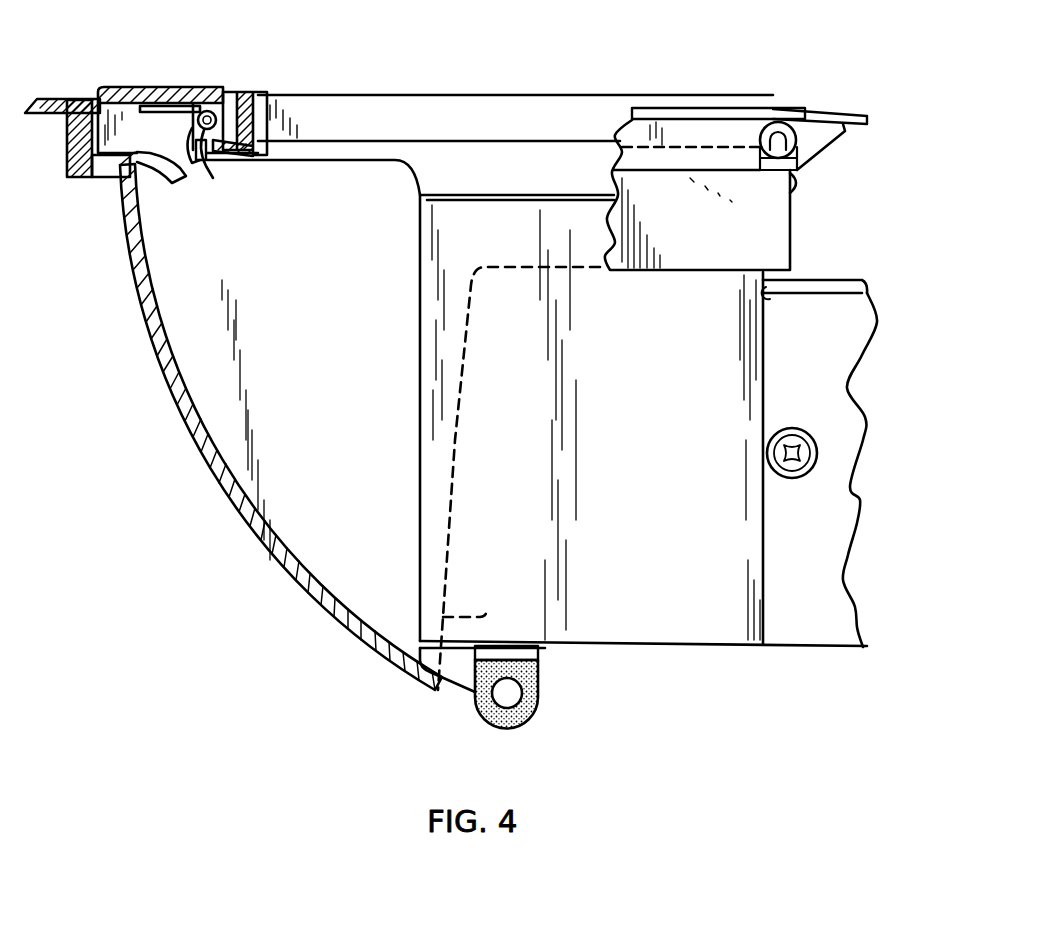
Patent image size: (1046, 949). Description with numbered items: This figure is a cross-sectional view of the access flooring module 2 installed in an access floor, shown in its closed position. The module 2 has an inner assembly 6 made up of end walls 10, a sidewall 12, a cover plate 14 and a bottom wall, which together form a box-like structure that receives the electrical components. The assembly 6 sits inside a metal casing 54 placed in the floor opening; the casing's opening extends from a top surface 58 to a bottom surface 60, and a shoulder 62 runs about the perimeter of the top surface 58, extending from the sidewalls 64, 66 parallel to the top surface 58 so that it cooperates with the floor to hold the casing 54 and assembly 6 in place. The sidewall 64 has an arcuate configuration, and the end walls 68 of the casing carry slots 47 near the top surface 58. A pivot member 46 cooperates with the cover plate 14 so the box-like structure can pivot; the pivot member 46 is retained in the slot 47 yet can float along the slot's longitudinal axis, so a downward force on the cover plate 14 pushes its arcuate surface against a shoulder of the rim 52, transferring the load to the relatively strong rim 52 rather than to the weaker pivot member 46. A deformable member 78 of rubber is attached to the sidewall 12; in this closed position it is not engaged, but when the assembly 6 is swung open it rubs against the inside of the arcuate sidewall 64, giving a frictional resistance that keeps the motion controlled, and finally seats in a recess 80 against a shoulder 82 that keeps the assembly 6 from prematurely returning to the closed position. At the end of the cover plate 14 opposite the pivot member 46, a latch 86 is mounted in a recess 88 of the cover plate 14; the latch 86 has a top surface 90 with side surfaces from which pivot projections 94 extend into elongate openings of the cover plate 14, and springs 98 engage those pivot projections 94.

The access flooring module 2 is at (326, 700).
The inner assembly 6 is at (815, 260).
The end walls 10 is at (607, 572).
The sidewall 12 is at (668, 650).
The cover plate 14 is at (537, 95).
The pivot member 46 is at (775, 123).
The slot 47 is at (797, 196).
The rim 52 is at (846, 132).
The metal casing 54 is at (298, 540).
The top surface 58 is at (58, 99).
The bottom surface 60 is at (470, 617).
The shoulder 62 is at (67, 113).
The sidewall 64 is at (218, 480).
The sidewall 66 is at (792, 242).
The end walls 68 is at (284, 324).
The deformable member 78 is at (540, 692).
The recess 80 is at (120, 202).
The shoulder 82 is at (152, 197).
The latch 86 is at (194, 72).
The recess 88 is at (233, 92).
The top surface 90 is at (118, 87).
The pivot projection 94 is at (202, 165).
The springs 98 is at (214, 165).